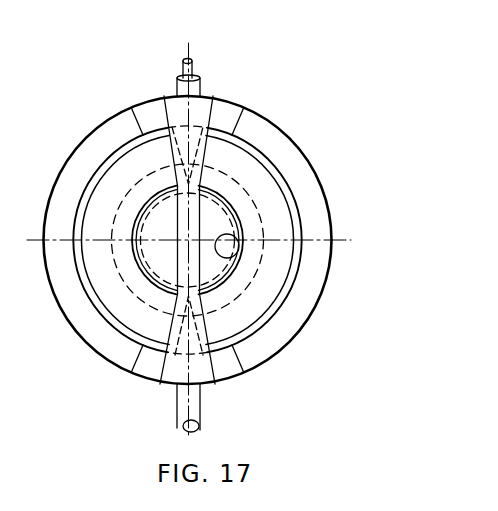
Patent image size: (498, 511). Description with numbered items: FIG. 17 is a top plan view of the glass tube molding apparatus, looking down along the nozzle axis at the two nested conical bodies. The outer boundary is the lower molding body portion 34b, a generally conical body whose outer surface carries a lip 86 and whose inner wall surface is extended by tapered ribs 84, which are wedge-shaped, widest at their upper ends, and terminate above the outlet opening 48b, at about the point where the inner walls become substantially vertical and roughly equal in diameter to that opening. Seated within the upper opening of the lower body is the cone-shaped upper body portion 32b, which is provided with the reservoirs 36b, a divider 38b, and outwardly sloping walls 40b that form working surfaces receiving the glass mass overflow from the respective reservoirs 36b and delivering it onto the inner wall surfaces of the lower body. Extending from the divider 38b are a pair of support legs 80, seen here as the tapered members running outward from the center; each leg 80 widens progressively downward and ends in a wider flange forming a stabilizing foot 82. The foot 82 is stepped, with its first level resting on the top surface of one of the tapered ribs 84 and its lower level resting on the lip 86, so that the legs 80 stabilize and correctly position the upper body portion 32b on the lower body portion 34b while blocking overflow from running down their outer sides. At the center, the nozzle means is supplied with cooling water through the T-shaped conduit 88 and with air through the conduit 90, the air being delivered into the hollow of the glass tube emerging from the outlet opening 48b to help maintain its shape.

The lower molding body portion 34b is at (340, 249).
The lip 86 is at (100, 147).
The outwardly sloping walls 40b is at (276, 187).
The stabilizing foot 82 is at (147, 108).
The support legs 80 is at (175, 368).
The divider 38b is at (177, 214).
The reservoirs 36b is at (211, 222).
The upper body portion 32b is at (141, 310).
The outlet opening 48b is at (238, 262).
The tapered ribs 84 is at (204, 160).
The T-shaped conduit 88 is at (200, 80).
The conduit 90 is at (191, 60).